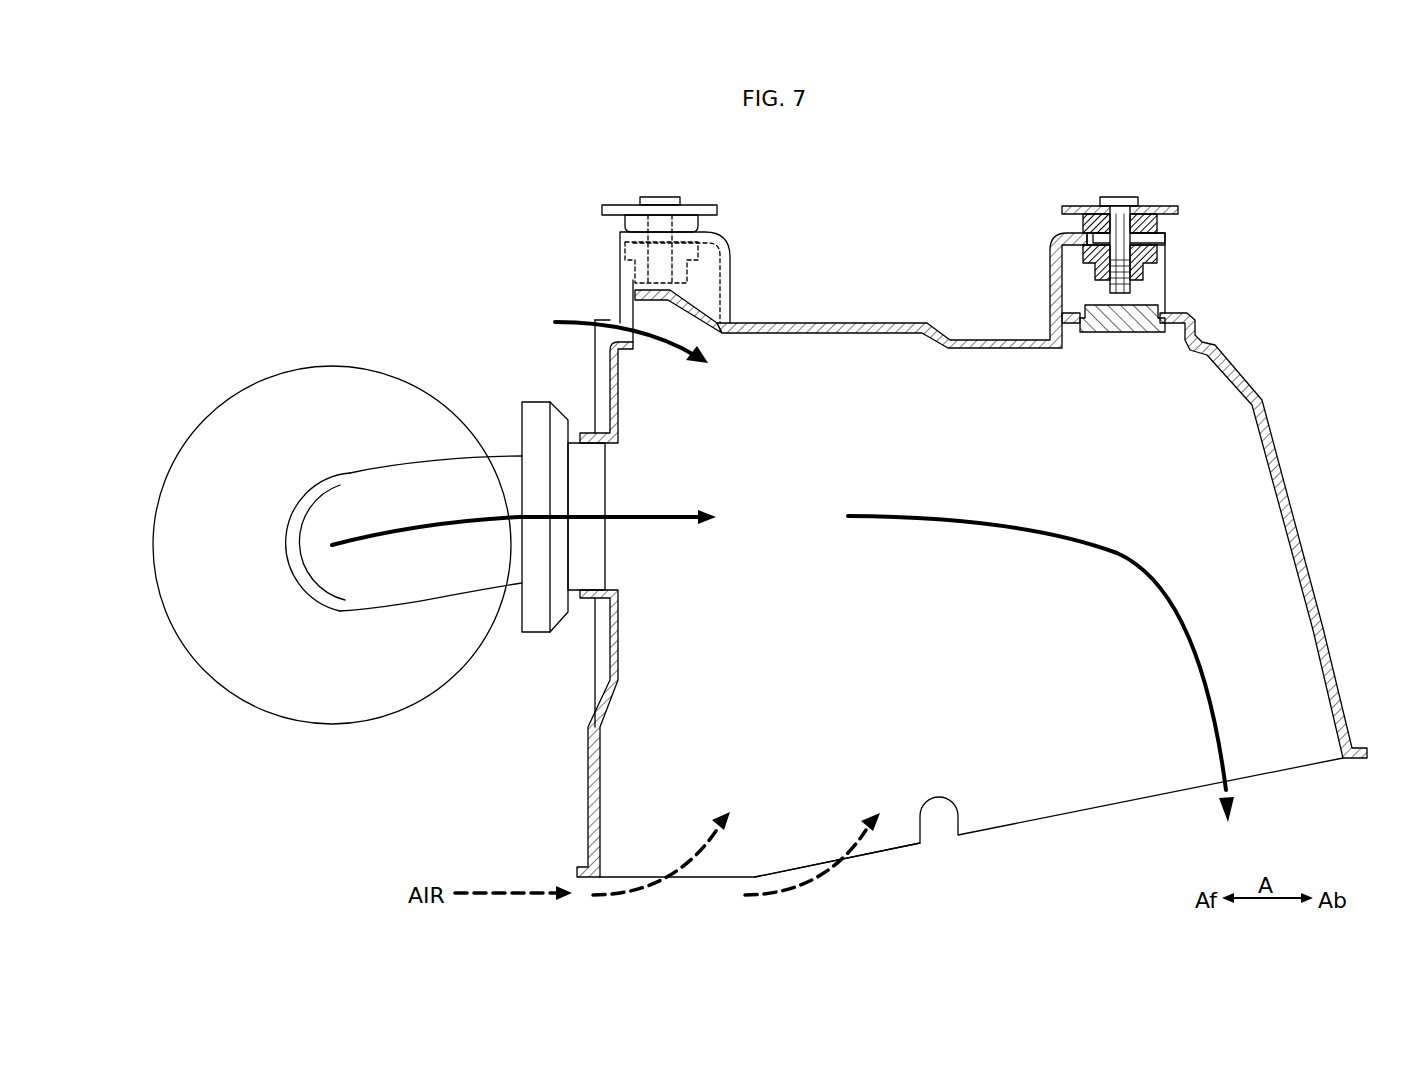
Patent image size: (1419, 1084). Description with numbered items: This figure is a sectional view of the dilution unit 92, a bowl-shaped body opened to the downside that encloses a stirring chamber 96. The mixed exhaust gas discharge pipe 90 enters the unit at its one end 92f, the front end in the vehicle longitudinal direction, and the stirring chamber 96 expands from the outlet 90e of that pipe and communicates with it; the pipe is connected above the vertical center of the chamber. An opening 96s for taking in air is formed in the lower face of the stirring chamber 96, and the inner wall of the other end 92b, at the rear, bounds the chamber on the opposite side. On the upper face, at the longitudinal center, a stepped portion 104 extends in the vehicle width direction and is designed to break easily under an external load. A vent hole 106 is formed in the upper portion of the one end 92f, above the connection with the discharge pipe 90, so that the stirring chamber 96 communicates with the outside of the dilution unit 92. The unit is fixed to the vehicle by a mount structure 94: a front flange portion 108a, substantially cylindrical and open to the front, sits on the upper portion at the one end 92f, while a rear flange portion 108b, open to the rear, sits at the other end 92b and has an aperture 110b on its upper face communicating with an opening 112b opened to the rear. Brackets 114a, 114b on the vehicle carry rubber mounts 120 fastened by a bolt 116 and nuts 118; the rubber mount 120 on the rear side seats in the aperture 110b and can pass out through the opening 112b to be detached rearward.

The mixed exhaust gas discharge pipe 90 is at (423, 480).
The outlet 90e is at (612, 553).
The dilution unit 92 is at (1146, 811).
The other end 92b is at (1303, 533).
The one end 92f is at (588, 787).
The mount structure 94 is at (1200, 197).
The stirring chamber 96 is at (707, 709).
The opening 96s is at (1077, 808).
The stepped portion 104 is at (953, 337).
The vent hole 106 is at (642, 313).
The front flange portion 108a is at (732, 268).
The rear flange portion 108b is at (1055, 263).
The aperture 110b is at (1102, 237).
The opening 112b is at (1168, 238).
The bracket 114a is at (613, 206).
The bracket 114b is at (1063, 206).
The bolt 116 is at (677, 194).
The nut 118 is at (647, 273).
The rubber mount 120 is at (625, 224).